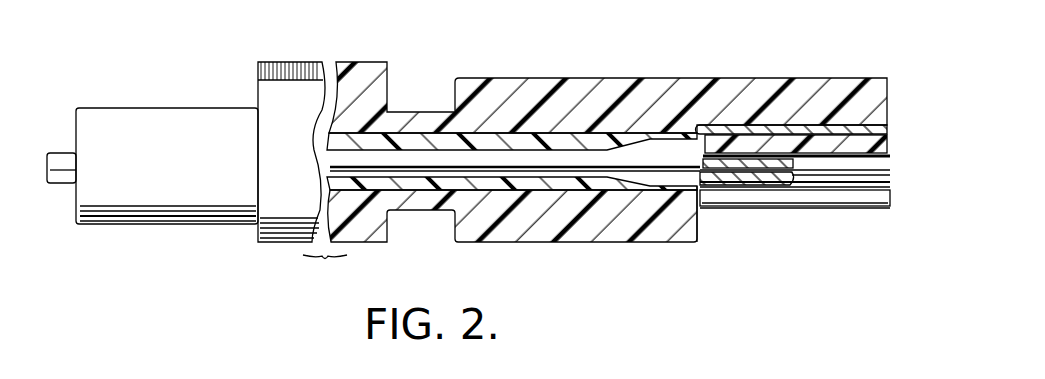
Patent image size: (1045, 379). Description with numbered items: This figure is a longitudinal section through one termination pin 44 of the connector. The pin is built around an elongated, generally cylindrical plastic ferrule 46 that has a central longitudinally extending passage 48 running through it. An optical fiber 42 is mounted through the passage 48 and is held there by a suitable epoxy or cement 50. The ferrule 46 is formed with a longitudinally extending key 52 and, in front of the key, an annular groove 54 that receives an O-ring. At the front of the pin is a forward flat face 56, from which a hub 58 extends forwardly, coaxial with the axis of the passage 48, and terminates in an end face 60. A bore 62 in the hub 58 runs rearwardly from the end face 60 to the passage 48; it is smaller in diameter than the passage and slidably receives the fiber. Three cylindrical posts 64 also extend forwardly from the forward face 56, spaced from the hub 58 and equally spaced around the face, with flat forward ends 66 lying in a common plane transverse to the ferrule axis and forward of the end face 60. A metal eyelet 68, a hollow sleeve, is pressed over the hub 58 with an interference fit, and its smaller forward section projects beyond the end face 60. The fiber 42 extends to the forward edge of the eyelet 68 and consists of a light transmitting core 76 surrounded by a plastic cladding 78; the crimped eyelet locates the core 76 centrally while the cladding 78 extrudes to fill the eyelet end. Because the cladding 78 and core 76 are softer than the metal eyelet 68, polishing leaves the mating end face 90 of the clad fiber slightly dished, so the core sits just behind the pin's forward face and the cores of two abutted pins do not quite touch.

The optical fiber 42 is at (340, 165).
The termination pin 44 is at (418, 61).
The plastic ferrule 46 is at (478, 229).
The passage 48 is at (418, 212).
The epoxy or cement 50 is at (620, 187).
The key 52 is at (283, 70).
The annular groove 54 is at (448, 97).
The forward flat face 56 is at (705, 238).
The hub 58 is at (712, 140).
The end face 60 is at (773, 145).
The bore 62 is at (713, 178).
The cylindrical posts 64 is at (822, 77).
The flat forward ends 66 is at (890, 206).
The metal eyelet 68 is at (718, 134).
The light transmitting core 76 is at (848, 153).
The plastic cladding 78 is at (886, 145).
The mating end face 90 is at (888, 164).